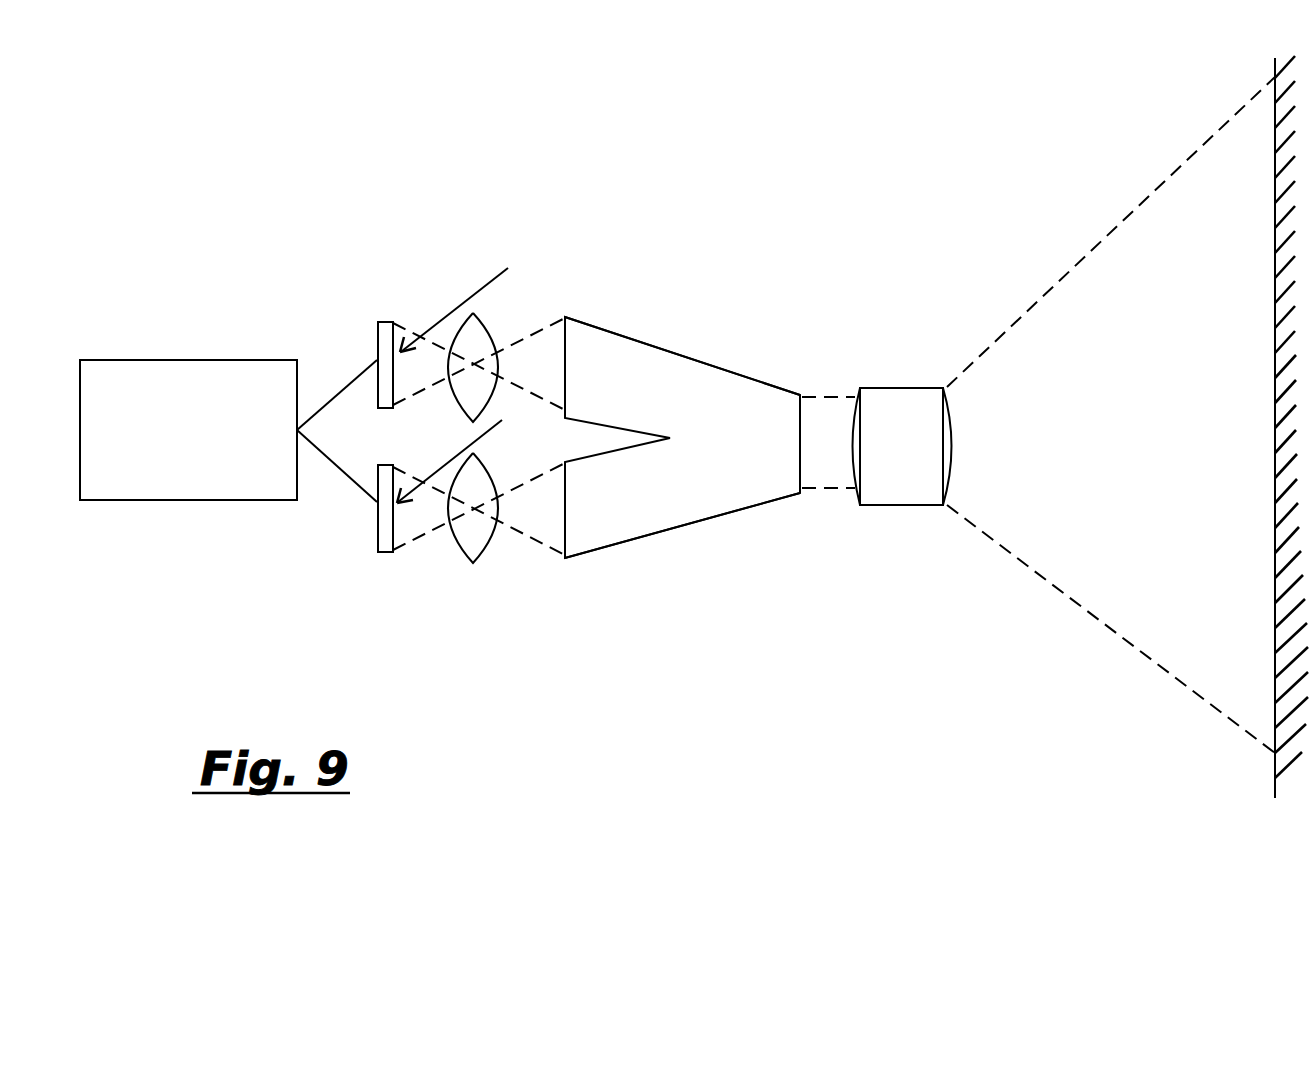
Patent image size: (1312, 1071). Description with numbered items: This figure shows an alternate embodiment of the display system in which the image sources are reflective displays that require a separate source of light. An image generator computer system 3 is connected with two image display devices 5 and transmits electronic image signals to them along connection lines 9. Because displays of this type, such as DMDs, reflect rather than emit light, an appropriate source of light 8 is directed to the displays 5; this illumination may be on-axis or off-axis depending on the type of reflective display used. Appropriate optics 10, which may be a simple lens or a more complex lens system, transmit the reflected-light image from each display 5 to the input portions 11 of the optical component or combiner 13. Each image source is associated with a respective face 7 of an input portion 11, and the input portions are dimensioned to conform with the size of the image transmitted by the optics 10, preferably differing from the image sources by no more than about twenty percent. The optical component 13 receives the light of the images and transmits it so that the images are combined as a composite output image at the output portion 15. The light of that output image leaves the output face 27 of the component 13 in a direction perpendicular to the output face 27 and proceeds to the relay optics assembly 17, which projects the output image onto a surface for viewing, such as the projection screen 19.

The image generator computer system 3 is at (185, 450).
The image display device 5 is at (387, 321).
The face 7 is at (560, 376).
The source of light 8 is at (478, 292).
The connection line 9 is at (347, 377).
The optics 10 is at (487, 337).
The input portion 11 is at (572, 323).
The optical component 13 is at (688, 513).
The output portion 15 is at (788, 401).
The relay optics assembly 17 is at (915, 461).
The projection screen 19 is at (1278, 778).
The output face 27 is at (802, 458).